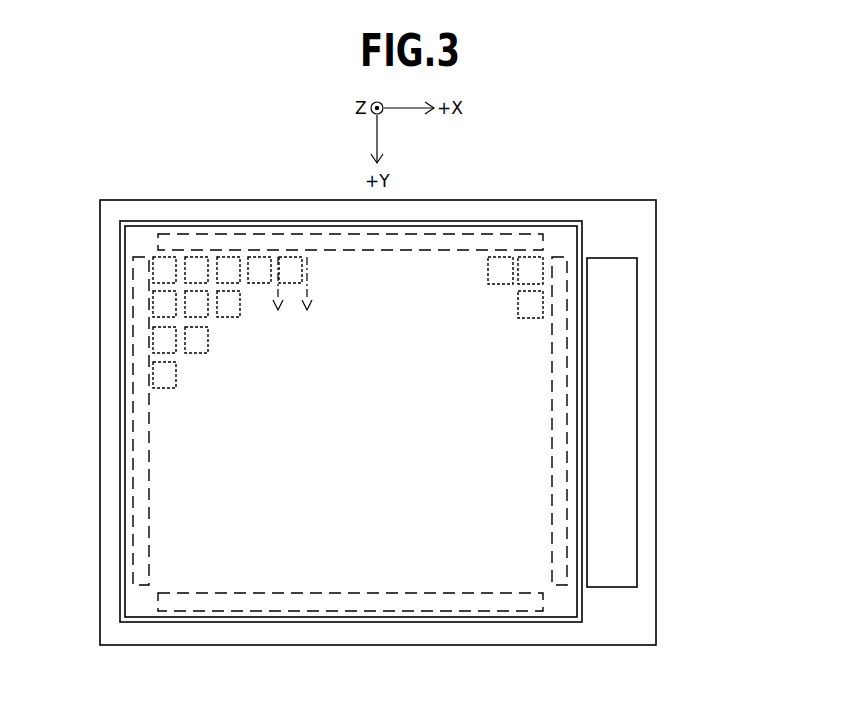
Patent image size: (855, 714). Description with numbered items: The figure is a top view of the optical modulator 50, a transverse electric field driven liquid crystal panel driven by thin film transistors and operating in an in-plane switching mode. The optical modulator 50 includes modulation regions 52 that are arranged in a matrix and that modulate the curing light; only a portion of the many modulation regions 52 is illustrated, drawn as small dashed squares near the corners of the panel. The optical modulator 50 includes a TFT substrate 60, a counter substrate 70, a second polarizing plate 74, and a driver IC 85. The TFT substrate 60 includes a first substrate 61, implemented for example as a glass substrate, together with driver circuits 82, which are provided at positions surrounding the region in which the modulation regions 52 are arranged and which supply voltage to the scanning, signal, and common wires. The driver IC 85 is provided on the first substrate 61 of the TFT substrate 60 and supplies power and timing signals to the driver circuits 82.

The optical modulator 50 is at (613, 153).
The modulation regions 52 is at (288, 256).
The TFT substrate 60 is at (743, 208).
The first substrate 61 is at (656, 233).
The counter substrate 70 is at (545, 623).
The second polarizing plate 74 is at (470, 618).
The driver circuits 82 is at (486, 235).
The driver IC 85 is at (637, 563).